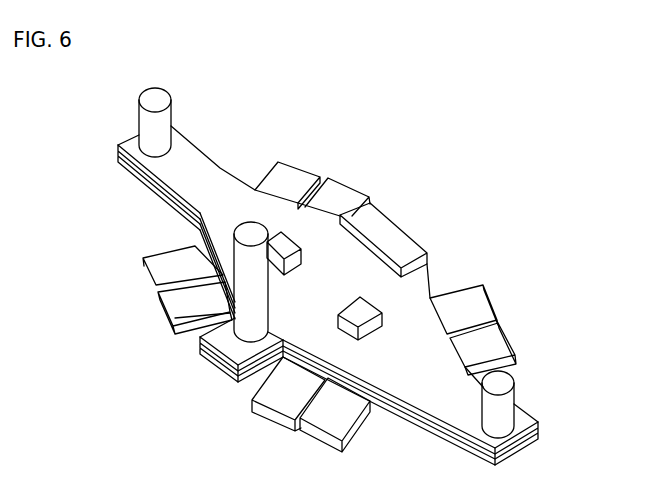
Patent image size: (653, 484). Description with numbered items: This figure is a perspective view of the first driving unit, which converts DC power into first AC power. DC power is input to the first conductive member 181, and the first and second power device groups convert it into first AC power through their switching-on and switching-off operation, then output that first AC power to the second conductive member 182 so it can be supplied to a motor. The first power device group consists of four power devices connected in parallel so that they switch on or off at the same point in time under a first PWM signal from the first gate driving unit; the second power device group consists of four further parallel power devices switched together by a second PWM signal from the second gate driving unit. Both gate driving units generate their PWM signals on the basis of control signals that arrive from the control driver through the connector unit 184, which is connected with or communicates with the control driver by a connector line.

The first conductive member 181 is at (155, 117).
The second conductive member 182 is at (248, 327).
The connector unit 184 is at (400, 228).